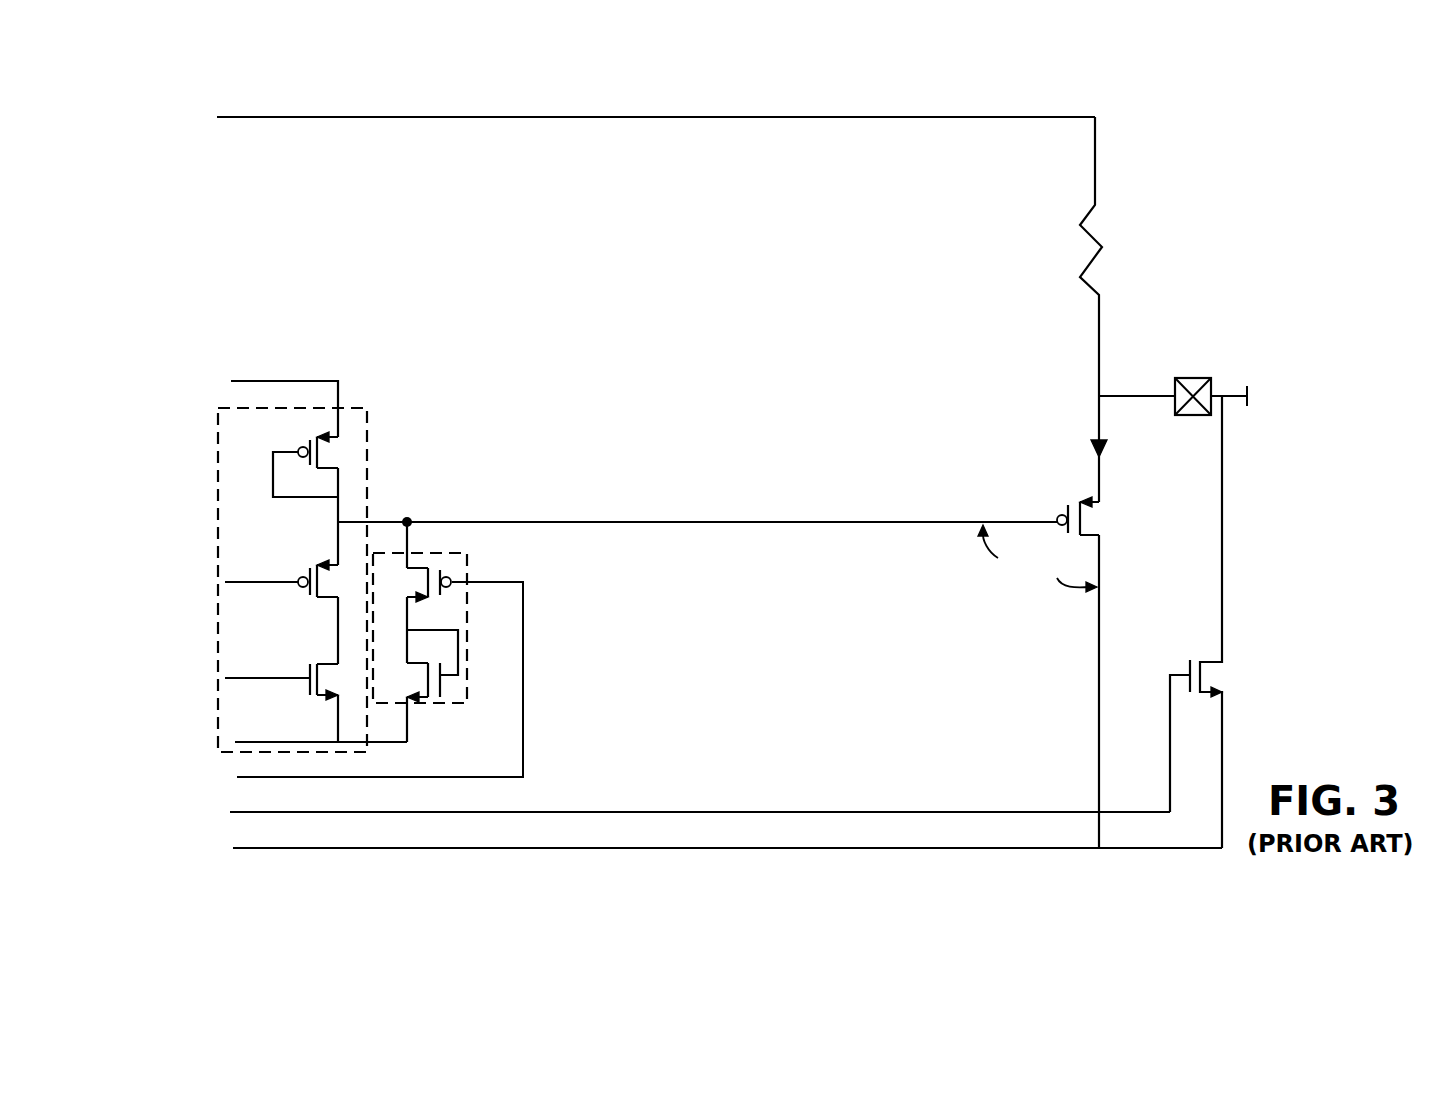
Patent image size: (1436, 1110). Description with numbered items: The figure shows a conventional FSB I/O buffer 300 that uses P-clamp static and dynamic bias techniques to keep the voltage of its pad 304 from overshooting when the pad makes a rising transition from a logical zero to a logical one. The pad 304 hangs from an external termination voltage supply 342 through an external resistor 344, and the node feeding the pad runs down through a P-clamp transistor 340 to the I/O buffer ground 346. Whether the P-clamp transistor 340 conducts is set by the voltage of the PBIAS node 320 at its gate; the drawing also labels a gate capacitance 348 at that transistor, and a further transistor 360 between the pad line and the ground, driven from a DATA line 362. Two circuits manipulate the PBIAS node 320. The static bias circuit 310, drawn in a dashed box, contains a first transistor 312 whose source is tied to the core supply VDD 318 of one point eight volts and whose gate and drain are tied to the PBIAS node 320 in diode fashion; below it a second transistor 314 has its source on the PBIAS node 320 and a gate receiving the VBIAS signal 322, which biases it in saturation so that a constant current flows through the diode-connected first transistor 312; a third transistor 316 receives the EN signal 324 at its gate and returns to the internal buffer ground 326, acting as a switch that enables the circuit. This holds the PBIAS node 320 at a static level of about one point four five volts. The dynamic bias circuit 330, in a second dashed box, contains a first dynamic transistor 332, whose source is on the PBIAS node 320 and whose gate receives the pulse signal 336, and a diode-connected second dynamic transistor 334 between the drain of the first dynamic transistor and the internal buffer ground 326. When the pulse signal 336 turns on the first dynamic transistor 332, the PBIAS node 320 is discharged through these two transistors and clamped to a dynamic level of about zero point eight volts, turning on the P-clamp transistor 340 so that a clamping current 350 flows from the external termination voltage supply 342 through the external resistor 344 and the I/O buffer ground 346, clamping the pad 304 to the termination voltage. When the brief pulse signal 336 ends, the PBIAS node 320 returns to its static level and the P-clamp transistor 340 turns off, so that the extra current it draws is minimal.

The I/O buffer 300 is at (897, 84).
The pad 304 is at (1192, 378).
The static bias circuit 310 is at (370, 432).
The first transistor 312 is at (363, 455).
The transistor M3 314 is at (345, 600).
The third transistor 316 is at (330, 654).
The VDD supply 318 is at (290, 349).
The PBIAS node 320 is at (411, 520).
The VBIAS signal 322 is at (261, 555).
The EN signal 324 is at (262, 662).
The internal buffer ground 326 is at (286, 730).
The dynamic bias circuit 330 is at (468, 578).
The first dynamic transistor 332 is at (413, 598).
The second dynamic transistor 334 is at (440, 705).
The pulse signal 336 is at (345, 773).
The P-clamp transistor 340 is at (1110, 510).
The external termination voltage supply 342 is at (318, 103).
The external resistor 344 is at (1140, 256).
The I/O buffer ground 346 is at (298, 843).
The gate capacitance Cm10 348 is at (1037, 567).
The clamping current 350 is at (1078, 449).
The transistor M11 360 is at (1180, 622).
The DATA line 362 is at (300, 808).